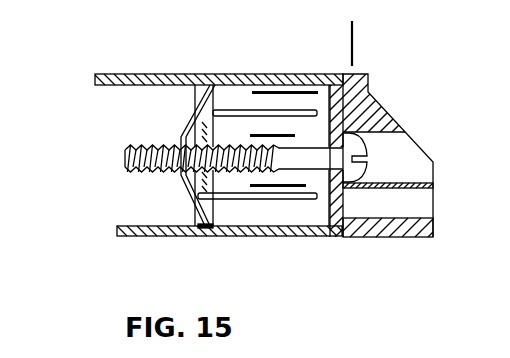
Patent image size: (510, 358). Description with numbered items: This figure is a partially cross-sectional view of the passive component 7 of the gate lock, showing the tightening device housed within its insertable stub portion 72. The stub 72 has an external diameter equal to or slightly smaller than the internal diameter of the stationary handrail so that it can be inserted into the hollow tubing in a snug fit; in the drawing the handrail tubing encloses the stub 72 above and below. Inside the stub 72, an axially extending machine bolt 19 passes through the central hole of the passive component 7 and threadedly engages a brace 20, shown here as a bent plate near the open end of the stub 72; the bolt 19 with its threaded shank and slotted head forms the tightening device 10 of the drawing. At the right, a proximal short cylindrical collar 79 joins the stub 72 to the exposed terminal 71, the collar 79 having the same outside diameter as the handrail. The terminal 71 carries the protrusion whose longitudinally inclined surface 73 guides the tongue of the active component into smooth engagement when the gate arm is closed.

The passive component 7 is at (352, 35).
The screw 10 is at (203, 237).
The machine bolt 19 is at (356, 170).
The brace 20 is at (186, 110).
The exposed terminal 71 is at (392, 238).
The insertable stub portion 72 is at (282, 236).
The longitudinally inclined surface 73 is at (386, 103).
The cylindrical collar 79 is at (340, 237).